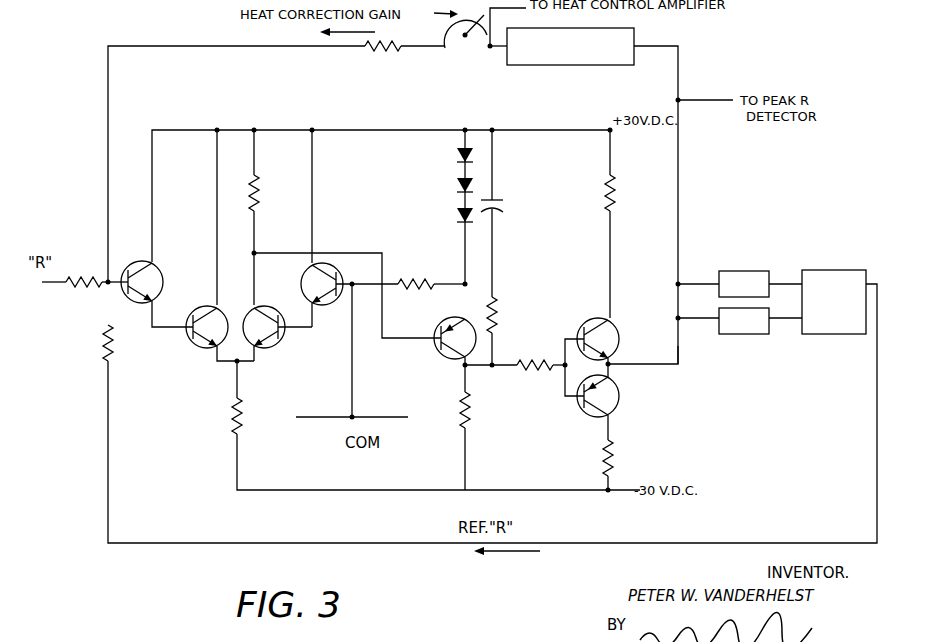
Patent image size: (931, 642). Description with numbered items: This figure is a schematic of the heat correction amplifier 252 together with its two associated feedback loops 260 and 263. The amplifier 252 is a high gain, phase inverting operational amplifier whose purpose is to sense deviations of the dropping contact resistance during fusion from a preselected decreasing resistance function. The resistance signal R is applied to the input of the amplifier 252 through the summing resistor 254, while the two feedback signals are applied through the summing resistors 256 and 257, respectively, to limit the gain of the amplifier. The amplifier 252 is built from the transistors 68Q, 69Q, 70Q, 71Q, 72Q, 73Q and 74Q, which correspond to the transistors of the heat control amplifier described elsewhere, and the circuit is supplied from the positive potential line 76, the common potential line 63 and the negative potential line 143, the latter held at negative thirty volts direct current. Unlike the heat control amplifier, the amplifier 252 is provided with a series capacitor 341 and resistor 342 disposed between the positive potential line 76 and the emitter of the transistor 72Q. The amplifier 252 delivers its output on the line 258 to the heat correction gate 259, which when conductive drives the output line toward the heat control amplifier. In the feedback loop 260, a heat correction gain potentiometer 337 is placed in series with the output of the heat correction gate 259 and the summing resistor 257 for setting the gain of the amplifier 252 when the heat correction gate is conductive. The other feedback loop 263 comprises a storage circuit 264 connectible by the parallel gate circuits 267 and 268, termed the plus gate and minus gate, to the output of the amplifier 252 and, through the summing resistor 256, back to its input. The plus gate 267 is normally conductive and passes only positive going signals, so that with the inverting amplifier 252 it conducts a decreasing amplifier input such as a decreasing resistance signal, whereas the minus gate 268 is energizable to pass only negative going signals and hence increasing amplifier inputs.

The feedback loop 260 is at (104, 43).
The heat correction amplifier 252 is at (233, 106).
The summing resistor 254 is at (70, 285).
The summing resistor 256 is at (103, 345).
The summing resistor 257 is at (366, 50).
The heat correction gain potentiometer 337 is at (450, 50).
The heat correction gate 259 is at (610, 66).
The positive potential line 76 is at (400, 130).
The series capacitor 341 is at (498, 206).
The resistor 342 is at (498, 303).
The transistor 68Q is at (162, 268).
The transistor 69Q is at (198, 349).
The transistor 70Q is at (266, 350).
The transistor 71Q is at (326, 306).
The transistor 72Q is at (446, 358).
The transistor 73Q is at (586, 325).
The transistor 74Q is at (620, 396).
The common potential line 63 is at (306, 420).
The negative potential line 143 is at (568, 492).
The output line 258 is at (668, 368).
The plus gate 267 is at (762, 268).
The minus gate 268 is at (762, 336).
The storage circuit 264 is at (817, 317).
The feedback loop 263 is at (176, 548).